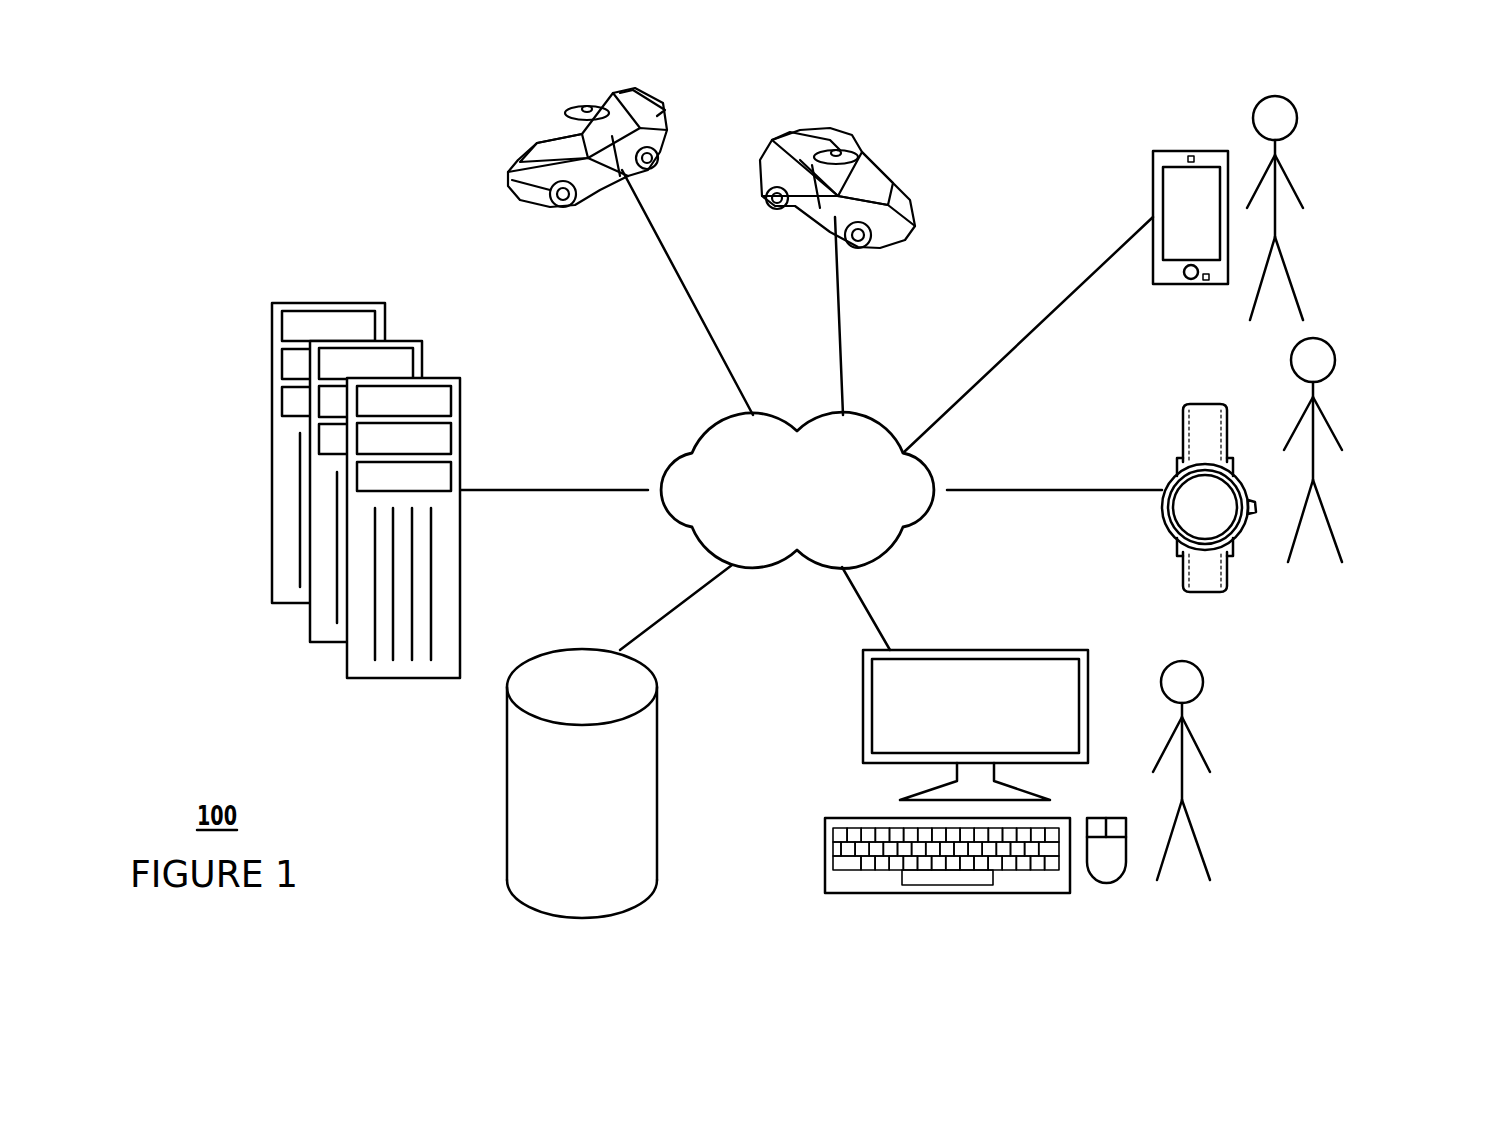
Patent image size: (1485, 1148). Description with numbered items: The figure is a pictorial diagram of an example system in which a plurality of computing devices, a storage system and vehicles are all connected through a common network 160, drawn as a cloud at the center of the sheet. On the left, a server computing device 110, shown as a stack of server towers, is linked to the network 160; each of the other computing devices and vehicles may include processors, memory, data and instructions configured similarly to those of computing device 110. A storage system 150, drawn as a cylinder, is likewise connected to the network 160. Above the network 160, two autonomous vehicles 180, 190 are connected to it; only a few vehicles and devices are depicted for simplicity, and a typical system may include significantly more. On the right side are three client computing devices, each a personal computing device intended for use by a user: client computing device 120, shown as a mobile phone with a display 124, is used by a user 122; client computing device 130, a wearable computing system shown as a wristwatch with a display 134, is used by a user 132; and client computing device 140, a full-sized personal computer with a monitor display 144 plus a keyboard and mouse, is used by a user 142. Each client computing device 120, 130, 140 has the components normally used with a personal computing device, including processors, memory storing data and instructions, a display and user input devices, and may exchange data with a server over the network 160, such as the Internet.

The computing device 110 is at (460, 427).
The client computing device 120 is at (1141, 229).
The user 122 is at (1275, 222).
The display 124 is at (1160, 166).
The client computing device 130 is at (1165, 509).
The user 132 is at (1315, 463).
The display 134 is at (1250, 520).
The client computing device 140 is at (1005, 731).
The user 142 is at (1182, 783).
The display 144 is at (1080, 677).
The storage system 150 is at (658, 793).
The network 160 is at (656, 517).
The autonomous vehicle 180 is at (508, 177).
The vehicle 190 is at (915, 208).